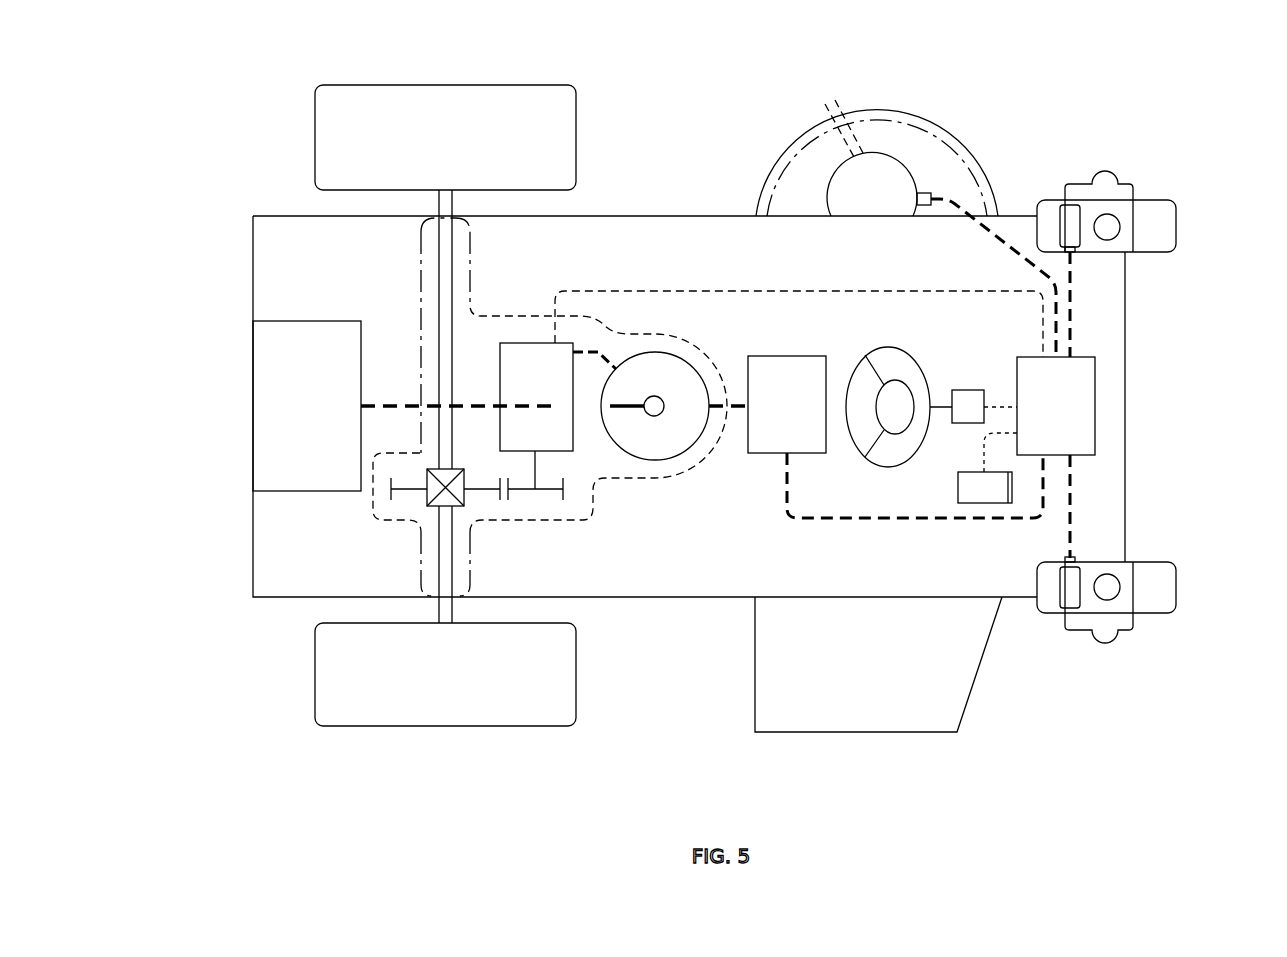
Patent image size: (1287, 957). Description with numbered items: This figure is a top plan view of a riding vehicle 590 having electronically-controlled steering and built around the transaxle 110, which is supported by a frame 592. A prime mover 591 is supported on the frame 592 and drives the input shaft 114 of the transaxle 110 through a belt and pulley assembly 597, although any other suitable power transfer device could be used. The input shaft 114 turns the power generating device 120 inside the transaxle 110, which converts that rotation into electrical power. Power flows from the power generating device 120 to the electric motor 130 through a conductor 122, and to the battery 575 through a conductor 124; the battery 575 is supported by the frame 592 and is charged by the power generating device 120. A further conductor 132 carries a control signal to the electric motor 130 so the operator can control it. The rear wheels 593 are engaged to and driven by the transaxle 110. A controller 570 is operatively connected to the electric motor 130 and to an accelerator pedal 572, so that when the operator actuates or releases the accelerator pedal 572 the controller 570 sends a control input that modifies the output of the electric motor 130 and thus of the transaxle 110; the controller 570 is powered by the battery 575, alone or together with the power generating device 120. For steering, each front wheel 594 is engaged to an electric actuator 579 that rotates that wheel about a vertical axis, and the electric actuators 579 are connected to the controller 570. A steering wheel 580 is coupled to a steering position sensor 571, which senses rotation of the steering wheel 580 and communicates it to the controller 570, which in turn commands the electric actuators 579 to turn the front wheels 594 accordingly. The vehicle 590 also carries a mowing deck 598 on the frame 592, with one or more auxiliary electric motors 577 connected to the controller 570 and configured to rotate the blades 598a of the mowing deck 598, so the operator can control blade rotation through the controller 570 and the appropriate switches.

The riding vehicle 590 is at (222, 122).
The frame 592 is at (675, 216).
The rear wheels 593 is at (443, 85).
The front wheels 594 is at (1176, 226).
The electric actuator 579 is at (1105, 196).
The prime mover 591 is at (289, 468).
The belt and pulley assembly 597 is at (383, 406).
The transaxle 110 is at (652, 502).
The conductor 132 is at (706, 290).
The electric motor 130 is at (517, 441).
The conductor 122 is at (598, 355).
The power generating device 120 is at (637, 446).
The input shaft 114 is at (652, 396).
The conductor 124 is at (740, 415).
The battery 575 is at (770, 419).
The steering wheel 580 is at (888, 347).
The steering position sensor 571 is at (967, 390).
The controller 570 is at (1038, 420).
The accelerator pedal 572 is at (958, 490).
The mowing deck 598 is at (877, 82).
The blade 598a is at (845, 128).
The auxiliary electric motor 577 is at (854, 201).